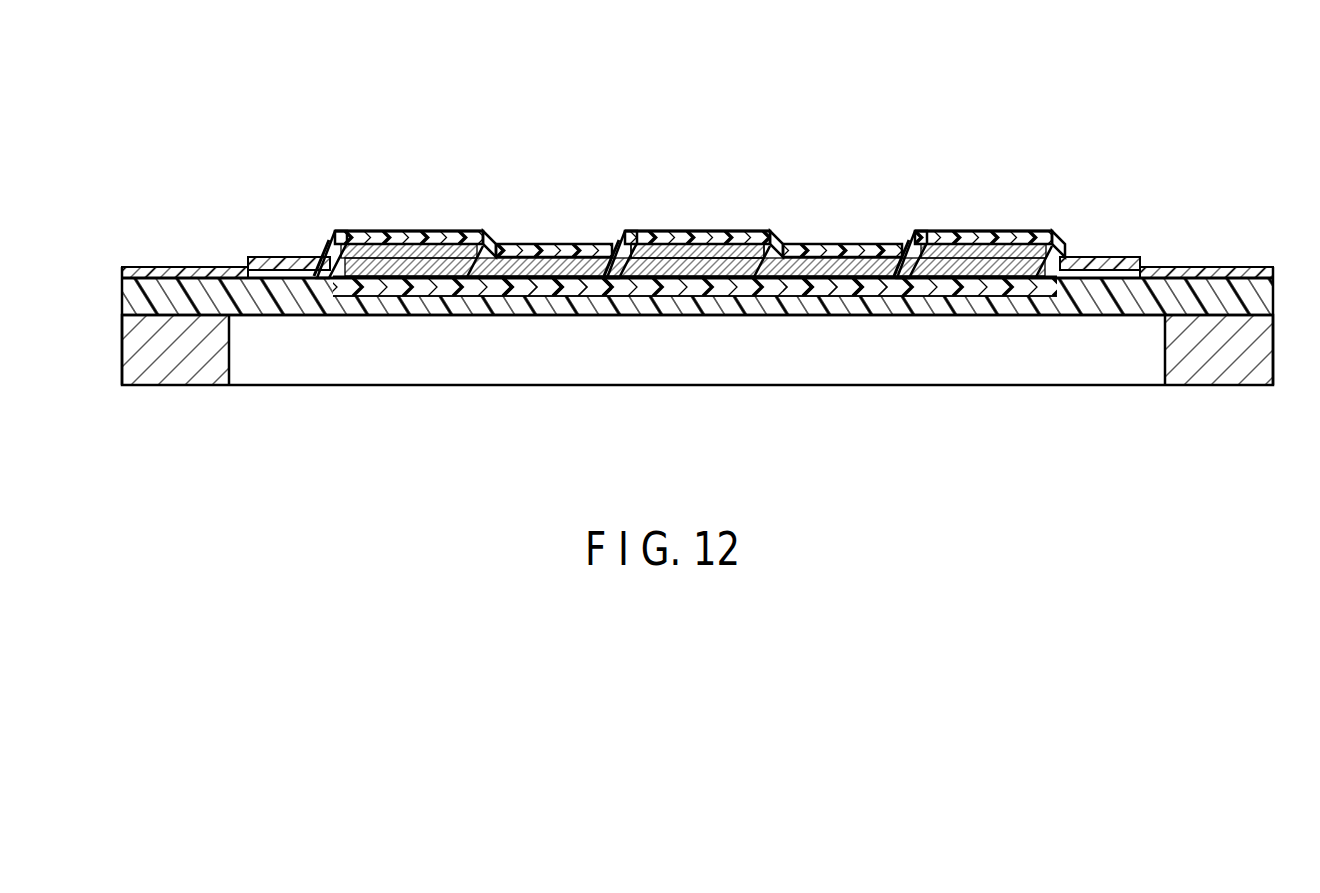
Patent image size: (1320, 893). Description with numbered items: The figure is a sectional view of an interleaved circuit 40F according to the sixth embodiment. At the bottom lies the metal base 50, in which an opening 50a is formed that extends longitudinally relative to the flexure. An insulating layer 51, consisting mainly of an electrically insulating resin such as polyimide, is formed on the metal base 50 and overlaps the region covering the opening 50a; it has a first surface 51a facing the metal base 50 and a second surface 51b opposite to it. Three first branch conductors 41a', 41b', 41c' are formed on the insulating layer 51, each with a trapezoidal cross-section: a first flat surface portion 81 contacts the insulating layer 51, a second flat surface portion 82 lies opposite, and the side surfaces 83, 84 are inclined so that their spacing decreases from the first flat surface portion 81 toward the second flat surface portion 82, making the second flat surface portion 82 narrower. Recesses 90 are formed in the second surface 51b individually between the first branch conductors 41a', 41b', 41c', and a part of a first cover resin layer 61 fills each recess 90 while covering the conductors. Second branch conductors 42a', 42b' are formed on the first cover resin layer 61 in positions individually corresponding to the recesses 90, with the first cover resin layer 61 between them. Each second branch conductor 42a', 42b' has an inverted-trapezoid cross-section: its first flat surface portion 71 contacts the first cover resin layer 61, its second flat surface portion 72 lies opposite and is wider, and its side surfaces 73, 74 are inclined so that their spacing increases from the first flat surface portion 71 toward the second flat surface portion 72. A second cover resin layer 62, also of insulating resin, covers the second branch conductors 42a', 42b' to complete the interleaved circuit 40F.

The interleaved circuit 40F is at (1034, 98).
The metal base 50 is at (191, 373).
The opening 50a is at (1082, 367).
The insulating layer 51 is at (508, 305).
The first surface 51a is at (300, 300).
The second surface 51b is at (311, 258).
The first cover resin layer 61 is at (574, 280).
The first flat surface portion 71 is at (537, 268).
The second flat surface portion 72 is at (552, 245).
The side surface 73 is at (486, 232).
The side surface 74 is at (628, 230).
The first flat surface portion 81 is at (440, 290).
The second flat surface portion 82 is at (408, 231).
The side surface 83 is at (341, 285).
The side surface 84 is at (473, 283).
The recess 90 is at (605, 290).
The second cover resin layer 62 is at (718, 232).
The first branch conductor 41a' is at (409, 296).
The first branch conductor 41b' is at (697, 293).
The first branch conductor 41c' is at (983, 304).
The second branch conductor 42a' is at (555, 230).
The second branch conductor 42b' is at (842, 230).